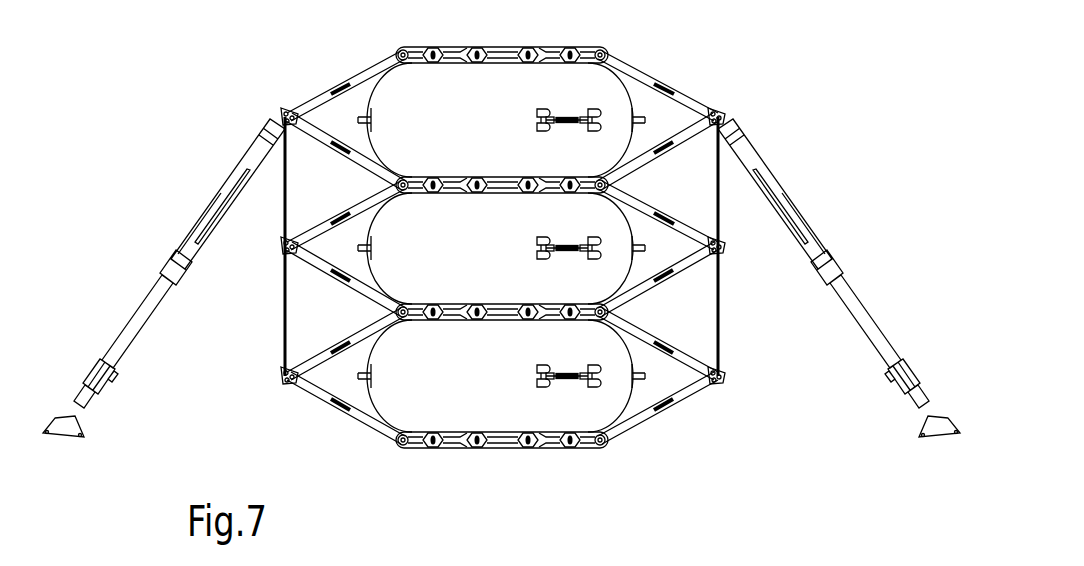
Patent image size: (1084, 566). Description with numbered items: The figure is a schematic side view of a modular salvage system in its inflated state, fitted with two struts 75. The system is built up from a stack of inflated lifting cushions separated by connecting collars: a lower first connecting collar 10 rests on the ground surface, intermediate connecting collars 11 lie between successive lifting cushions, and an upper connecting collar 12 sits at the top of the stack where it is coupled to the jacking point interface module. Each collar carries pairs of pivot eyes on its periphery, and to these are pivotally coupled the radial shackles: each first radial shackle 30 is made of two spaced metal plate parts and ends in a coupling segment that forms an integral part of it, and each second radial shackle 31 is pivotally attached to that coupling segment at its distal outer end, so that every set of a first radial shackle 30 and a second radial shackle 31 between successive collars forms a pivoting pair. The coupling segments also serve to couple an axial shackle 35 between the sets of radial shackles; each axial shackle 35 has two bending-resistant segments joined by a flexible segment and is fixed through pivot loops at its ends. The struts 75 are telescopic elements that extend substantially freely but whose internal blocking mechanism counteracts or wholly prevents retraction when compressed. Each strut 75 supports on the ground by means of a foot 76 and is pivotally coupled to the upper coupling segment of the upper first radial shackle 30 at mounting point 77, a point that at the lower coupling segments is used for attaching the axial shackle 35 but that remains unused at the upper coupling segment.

The first connecting collar 10 is at (528, 445).
The connecting collar 11 is at (491, 189).
The upper connecting collar 12 is at (526, 50).
The first radial shackle 30 is at (657, 165).
The second radial shackle 31 is at (336, 88).
The axial shackle 35 is at (280, 198).
The strut 75 is at (192, 228).
The foot 76 is at (78, 428).
The mounting point 77 is at (722, 108).